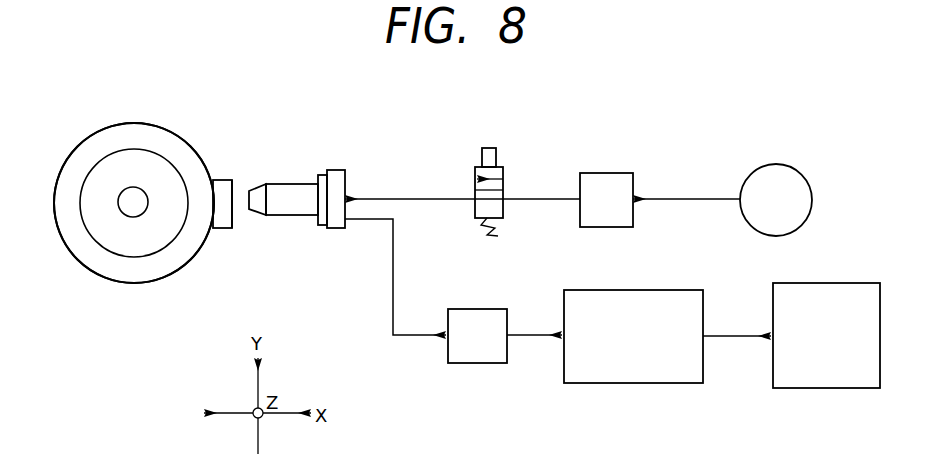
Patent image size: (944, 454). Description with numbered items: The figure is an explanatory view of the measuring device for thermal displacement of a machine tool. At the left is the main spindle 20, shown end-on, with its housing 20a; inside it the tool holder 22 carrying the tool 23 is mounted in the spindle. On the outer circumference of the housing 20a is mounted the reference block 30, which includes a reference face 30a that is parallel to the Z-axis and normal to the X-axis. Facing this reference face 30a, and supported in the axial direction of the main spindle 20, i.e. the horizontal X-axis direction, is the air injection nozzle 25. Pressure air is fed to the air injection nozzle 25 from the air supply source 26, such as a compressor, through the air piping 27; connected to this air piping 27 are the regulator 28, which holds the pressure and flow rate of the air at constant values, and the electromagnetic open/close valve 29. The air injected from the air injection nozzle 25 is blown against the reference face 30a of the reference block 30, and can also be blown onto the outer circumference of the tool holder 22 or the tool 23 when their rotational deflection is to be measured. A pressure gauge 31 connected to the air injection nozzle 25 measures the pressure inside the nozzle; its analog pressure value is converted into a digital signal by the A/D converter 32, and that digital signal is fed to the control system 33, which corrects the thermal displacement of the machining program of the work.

The main spindle 20 is at (82, 138).
The housing 20a is at (120, 132).
The tool holder 22 is at (148, 163).
The tool 23 is at (130, 212).
The air injection nozzle 25 is at (296, 192).
The air supply source 26 is at (787, 162).
The air piping 27 is at (686, 198).
The regulator 28 is at (612, 177).
The electromagnetic open/close valve 29 is at (505, 181).
The reference block 30 is at (220, 178).
The reference face 30a is at (232, 217).
The pressure gauge 31 is at (478, 365).
The A/D converter 32 is at (680, 289).
The control system 33 is at (855, 282).